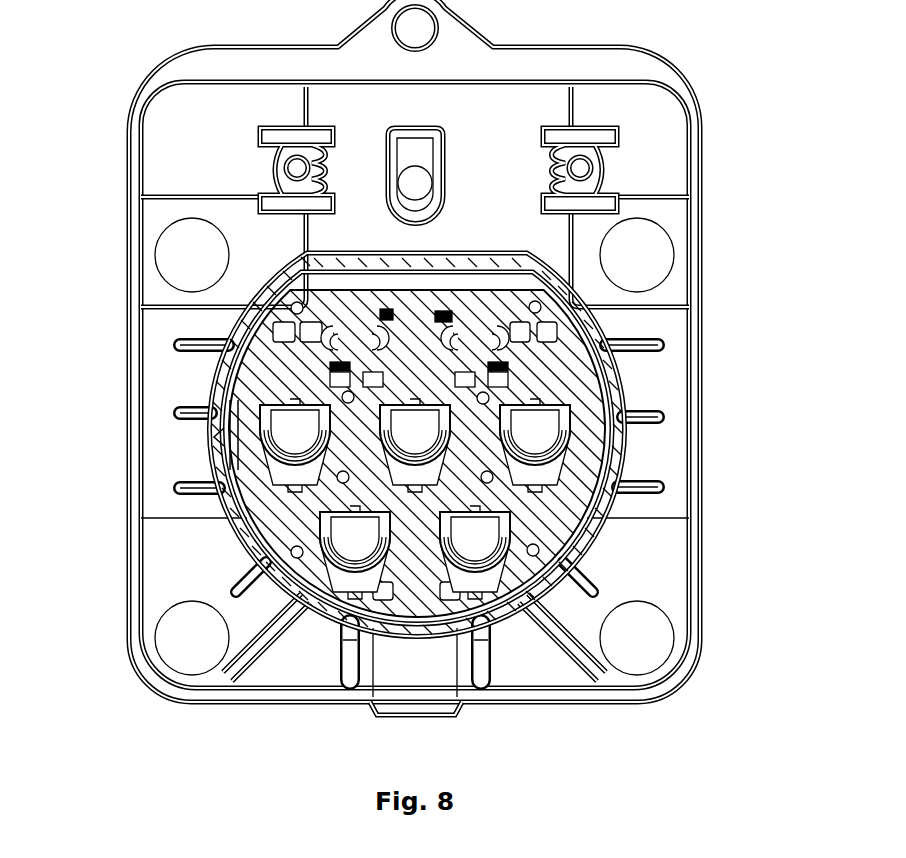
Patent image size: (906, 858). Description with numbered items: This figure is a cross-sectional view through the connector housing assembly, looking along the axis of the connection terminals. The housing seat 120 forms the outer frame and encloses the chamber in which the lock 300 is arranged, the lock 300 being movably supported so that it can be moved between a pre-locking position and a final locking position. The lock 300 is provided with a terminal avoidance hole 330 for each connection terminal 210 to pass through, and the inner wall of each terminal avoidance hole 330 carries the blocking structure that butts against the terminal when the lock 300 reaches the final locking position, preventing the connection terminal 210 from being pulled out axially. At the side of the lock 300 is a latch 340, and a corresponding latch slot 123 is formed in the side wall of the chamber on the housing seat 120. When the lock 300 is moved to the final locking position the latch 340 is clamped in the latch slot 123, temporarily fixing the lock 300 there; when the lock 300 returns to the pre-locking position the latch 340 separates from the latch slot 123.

The housing seat 120 is at (148, 337).
The latch slot 123 is at (200, 425).
The latch 340 is at (213, 447).
The lock 300 is at (615, 333).
The terminal avoidance hole 330 is at (598, 388).
The connection terminal 210 is at (640, 428).